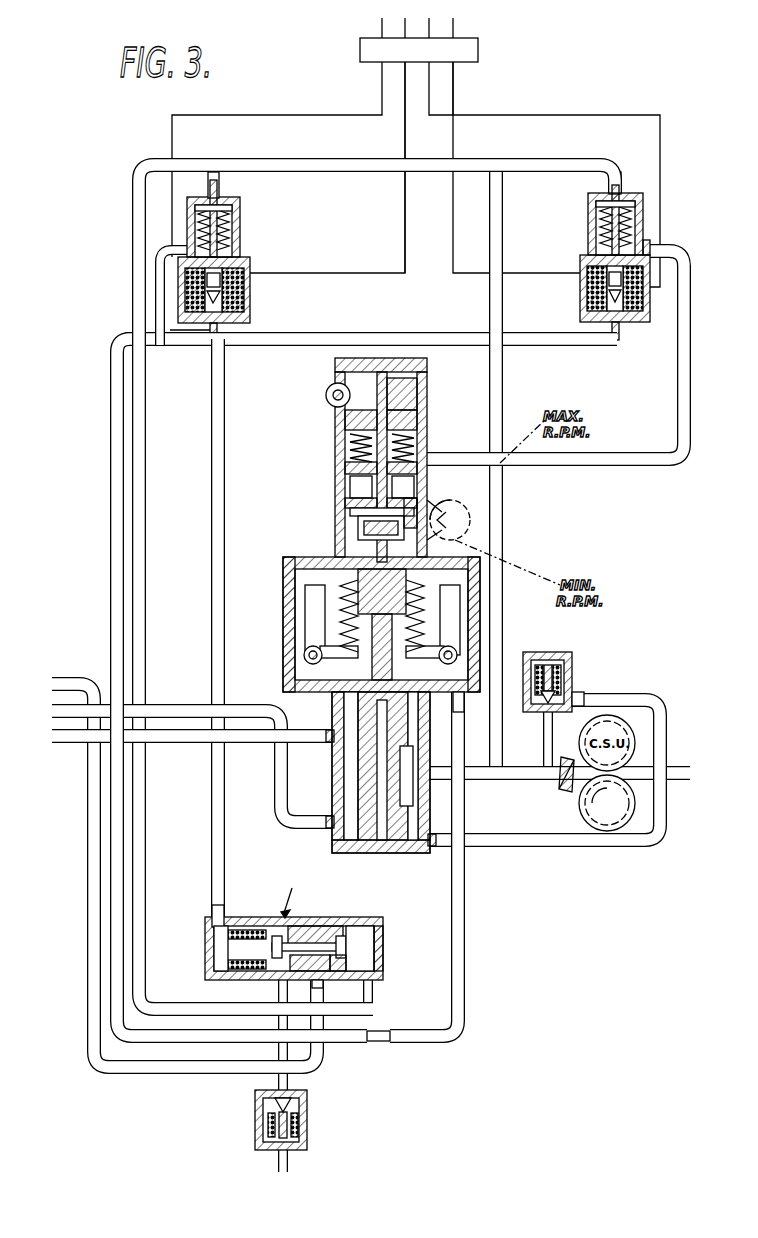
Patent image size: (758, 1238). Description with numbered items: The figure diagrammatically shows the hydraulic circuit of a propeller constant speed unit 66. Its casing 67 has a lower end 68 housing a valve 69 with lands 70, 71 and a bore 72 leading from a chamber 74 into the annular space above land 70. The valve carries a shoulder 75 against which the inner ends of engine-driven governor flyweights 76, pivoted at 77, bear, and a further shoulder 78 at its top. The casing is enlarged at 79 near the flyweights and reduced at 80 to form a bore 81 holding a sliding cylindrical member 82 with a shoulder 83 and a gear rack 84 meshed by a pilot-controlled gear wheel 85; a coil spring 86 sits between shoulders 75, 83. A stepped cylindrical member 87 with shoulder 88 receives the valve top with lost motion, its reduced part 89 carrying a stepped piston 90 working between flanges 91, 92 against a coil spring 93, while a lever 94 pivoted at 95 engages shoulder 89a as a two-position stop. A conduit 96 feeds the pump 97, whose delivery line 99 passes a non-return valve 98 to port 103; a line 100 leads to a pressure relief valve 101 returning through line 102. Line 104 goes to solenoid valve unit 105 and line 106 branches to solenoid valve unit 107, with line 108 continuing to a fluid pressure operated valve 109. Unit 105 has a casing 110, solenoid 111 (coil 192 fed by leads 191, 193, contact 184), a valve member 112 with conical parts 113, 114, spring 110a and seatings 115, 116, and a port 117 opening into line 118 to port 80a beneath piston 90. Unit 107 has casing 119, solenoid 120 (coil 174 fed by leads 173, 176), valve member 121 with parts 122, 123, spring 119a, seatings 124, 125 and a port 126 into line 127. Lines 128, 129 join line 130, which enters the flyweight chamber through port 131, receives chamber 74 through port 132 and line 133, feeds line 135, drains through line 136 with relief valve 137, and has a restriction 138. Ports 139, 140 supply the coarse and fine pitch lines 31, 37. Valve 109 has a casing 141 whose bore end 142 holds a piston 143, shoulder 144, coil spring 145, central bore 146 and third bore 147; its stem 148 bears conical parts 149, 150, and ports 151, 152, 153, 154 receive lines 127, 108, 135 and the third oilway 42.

The line 31 is at (74, 740).
The line 37 is at (74, 710).
The line 42 is at (61, 682).
The constant speed unit 66 is at (384, 614).
The casing 67 is at (283, 656).
The lower end of casing 68 is at (391, 785).
The valve 69 is at (350, 842).
The land 70 is at (410, 735).
The land 71 is at (408, 822).
The bore 72 is at (382, 812).
The chamber 74 is at (400, 852).
The shoulder 75 is at (397, 624).
The governor flyweights 76 is at (449, 603).
The pivot 77 is at (450, 655).
The further shoulder 78 is at (358, 526).
The increased size portion of casing 79 is at (283, 598).
The reduced portion of casing 80 is at (345, 458).
The port 80a is at (555, 355).
The bore 81 is at (345, 495).
The sliding cylindrical member 82 is at (350, 511).
The inwardly directed shoulder 83 is at (342, 613).
The gear rack 84 is at (420, 512).
The gear wheel 85 is at (480, 509).
The coil spring 86 is at (418, 612).
The stepped cylindrical member 87 is at (462, 497).
The inwardly directed shoulder 88 is at (440, 540).
The reduced diameter part 89 is at (418, 445).
The shoulder 89a is at (392, 385).
The stepped piston 90 is at (410, 435).
The flange 91 is at (345, 478).
The flange 92 is at (415, 405).
The coil spring 93 is at (345, 430).
The lever 94 is at (373, 430).
The pivot 95 is at (326, 393).
The conduit 96 is at (673, 766).
The constant speed unit pump 97 is at (636, 803).
The non-return valve 98 is at (562, 781).
The fluid delivery line 99 is at (565, 795).
The line 100 is at (548, 742).
The pressure relief valve 101 is at (573, 680).
The line 102 is at (625, 700).
The port 103 is at (563, 761).
The line 104 is at (350, 561).
The solenoid valve unit 105 is at (617, 213).
The line 106 is at (472, 160).
The solenoid valve unit 107 is at (194, 195).
The line 108 is at (132, 212).
The fluid pressure operated valve 109 is at (303, 890).
The hollow casing 110 is at (590, 220).
The spring 110a is at (598, 231).
The electrical solenoid 111 is at (607, 306).
The valve member 112 is at (640, 240).
The upper conical part 113 is at (620, 185).
The lower conical part 114 is at (585, 290).
The seating 115 is at (604, 202).
The seating 116 is at (590, 305).
The port 117 is at (650, 277).
The line 118 is at (678, 370).
The hollow casing 119 is at (187, 231).
The spring 119a is at (196, 208).
The electrical solenoid 120 is at (227, 290).
The valve member 121 is at (160, 252).
The upper conical part 122 is at (222, 205).
The lower conical part 123 is at (250, 286).
The seating 124 is at (212, 196).
The seating 125 is at (225, 326).
The port 126 is at (180, 264).
The line 127 is at (212, 398).
The line 128 is at (487, 338).
The line 129 is at (170, 330).
The line 130 is at (116, 376).
The port 131 is at (466, 697).
The port 132 is at (426, 846).
The line 133 is at (545, 771).
The line 135 is at (278, 1020).
The line 136 is at (268, 1085).
The relief valve 137 is at (279, 1119).
The restriction 138 is at (381, 1040).
The port 139 is at (330, 742).
The port 140 is at (330, 825).
The casing 141 is at (298, 934).
The left-hand end of bore 142 is at (262, 917).
The piston 143 is at (228, 934).
The shoulder 144 is at (255, 980).
The coil spring 145 is at (228, 962).
The central bore 146 is at (346, 924).
The third bore 147 is at (378, 921).
The stem 148 is at (320, 926).
The conical part 149 is at (298, 930).
The conical part 150 is at (362, 945).
The port 151 is at (214, 915).
The port 152 is at (372, 978).
The port 153 is at (324, 986).
The port 154 is at (346, 962).
The lead 173 is at (415, 262).
The coil 174 is at (199, 290).
The lead 176 is at (320, 114).
The contact 184 is at (545, 769).
The lead 191 is at (585, 114).
The coil 192 is at (597, 297).
The lead 193 is at (456, 245).